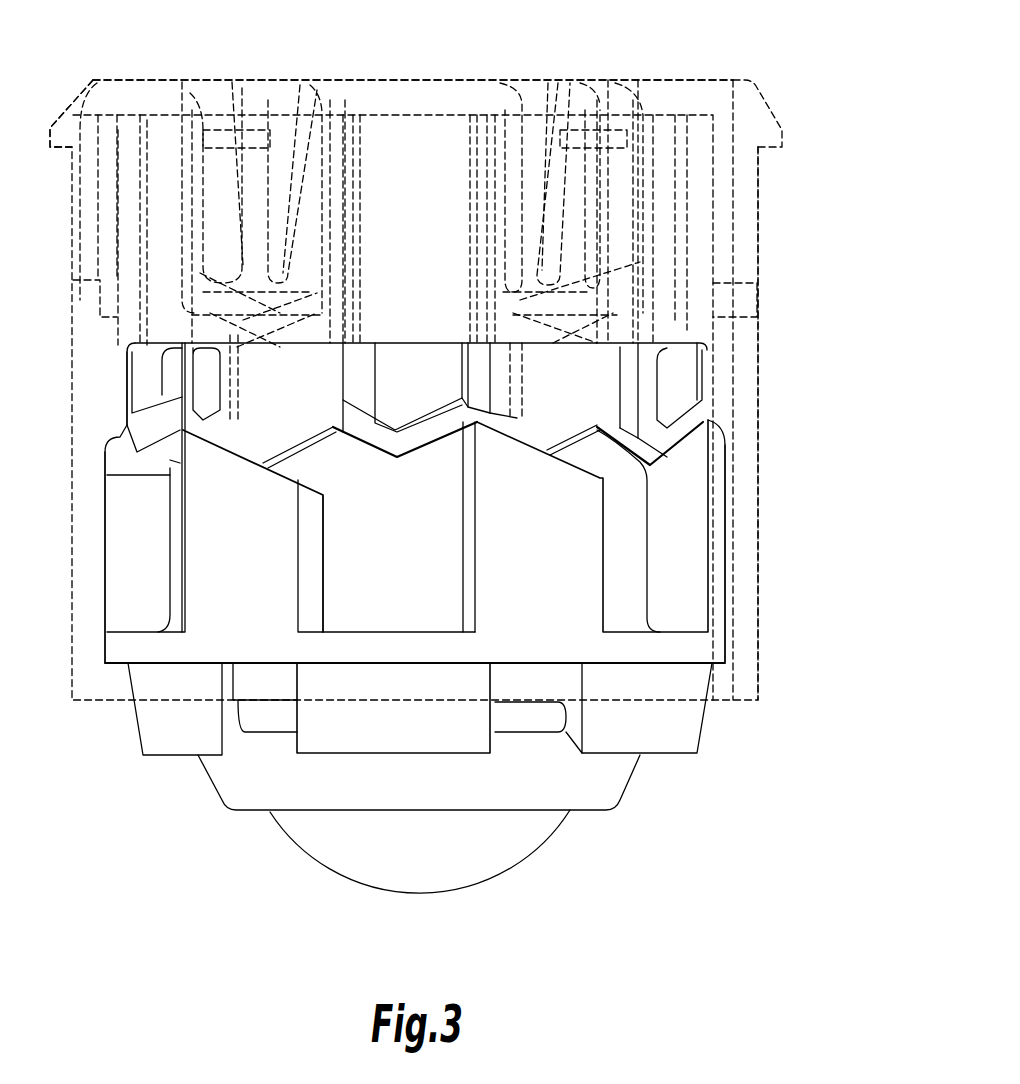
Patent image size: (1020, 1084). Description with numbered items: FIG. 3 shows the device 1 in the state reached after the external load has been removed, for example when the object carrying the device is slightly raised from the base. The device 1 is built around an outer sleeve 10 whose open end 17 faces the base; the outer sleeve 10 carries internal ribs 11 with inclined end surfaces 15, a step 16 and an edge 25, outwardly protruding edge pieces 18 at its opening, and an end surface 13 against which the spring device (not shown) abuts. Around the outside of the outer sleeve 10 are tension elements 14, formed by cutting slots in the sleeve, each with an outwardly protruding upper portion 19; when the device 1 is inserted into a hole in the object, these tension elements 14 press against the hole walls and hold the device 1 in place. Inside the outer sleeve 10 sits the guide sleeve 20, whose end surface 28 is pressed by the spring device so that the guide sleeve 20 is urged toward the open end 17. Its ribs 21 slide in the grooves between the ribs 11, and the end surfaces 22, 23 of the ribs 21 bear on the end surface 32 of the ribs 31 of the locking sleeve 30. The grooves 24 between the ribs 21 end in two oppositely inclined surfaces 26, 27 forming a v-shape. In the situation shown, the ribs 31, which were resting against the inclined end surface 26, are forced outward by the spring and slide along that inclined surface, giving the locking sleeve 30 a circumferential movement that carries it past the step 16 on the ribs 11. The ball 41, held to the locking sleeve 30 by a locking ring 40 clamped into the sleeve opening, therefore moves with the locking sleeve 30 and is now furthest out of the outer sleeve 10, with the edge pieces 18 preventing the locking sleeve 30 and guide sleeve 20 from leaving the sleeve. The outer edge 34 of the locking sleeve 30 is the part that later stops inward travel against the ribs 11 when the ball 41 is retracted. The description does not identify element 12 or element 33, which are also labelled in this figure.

The device 1 is at (233, 884).
The outer sleeve 10 is at (760, 300).
The ribs 11 is at (627, 240).
The top wall 12 is at (132, 80).
The end surface 13 is at (130, 122).
The tension elements 14 is at (770, 148).
The end surfaces 15 is at (580, 350).
The step 16 is at (487, 415).
The open end 17 is at (100, 700).
The edge pieces 18 is at (347, 680).
The upper portion 19 is at (782, 132).
The guide sleeve 20 is at (237, 430).
The ribs 21 is at (340, 472).
The end surface 22 is at (420, 452).
The end surface 23 is at (368, 432).
The grooves 24 is at (257, 443).
The edge 25 is at (600, 372).
The inclined end surface 26 is at (523, 447).
The inclined surface 27 is at (590, 442).
The end surface 28 is at (190, 345).
The locking sleeve 30 is at (703, 643).
The ribs 31 is at (517, 615).
The end surface 32 is at (590, 470).
The central post 33 is at (487, 432).
The outer edge 34 is at (710, 678).
The locking ring 40 is at (600, 777).
The ball 41 is at (513, 843).